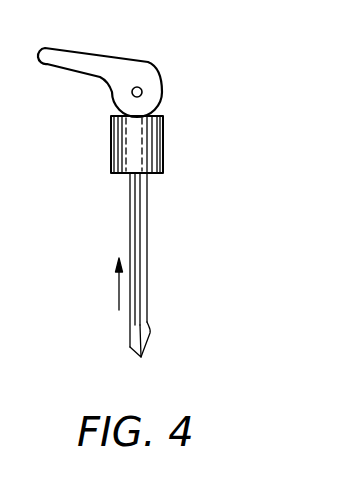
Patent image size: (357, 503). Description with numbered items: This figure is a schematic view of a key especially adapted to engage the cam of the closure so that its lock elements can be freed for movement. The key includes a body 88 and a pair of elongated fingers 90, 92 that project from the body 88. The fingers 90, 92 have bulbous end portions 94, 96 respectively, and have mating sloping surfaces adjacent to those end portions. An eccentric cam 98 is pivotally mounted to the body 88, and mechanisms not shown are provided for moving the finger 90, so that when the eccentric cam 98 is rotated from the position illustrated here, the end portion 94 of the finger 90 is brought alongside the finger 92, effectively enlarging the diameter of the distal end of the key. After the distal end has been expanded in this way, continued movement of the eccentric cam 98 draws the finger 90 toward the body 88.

The eccentric cam 98 is at (147, 63).
The body 88 is at (157, 143).
The finger 90 is at (130, 222).
The finger 92 is at (147, 222).
The bulbous end portion 96 is at (148, 330).
The bulbous end portion 94 is at (132, 346).